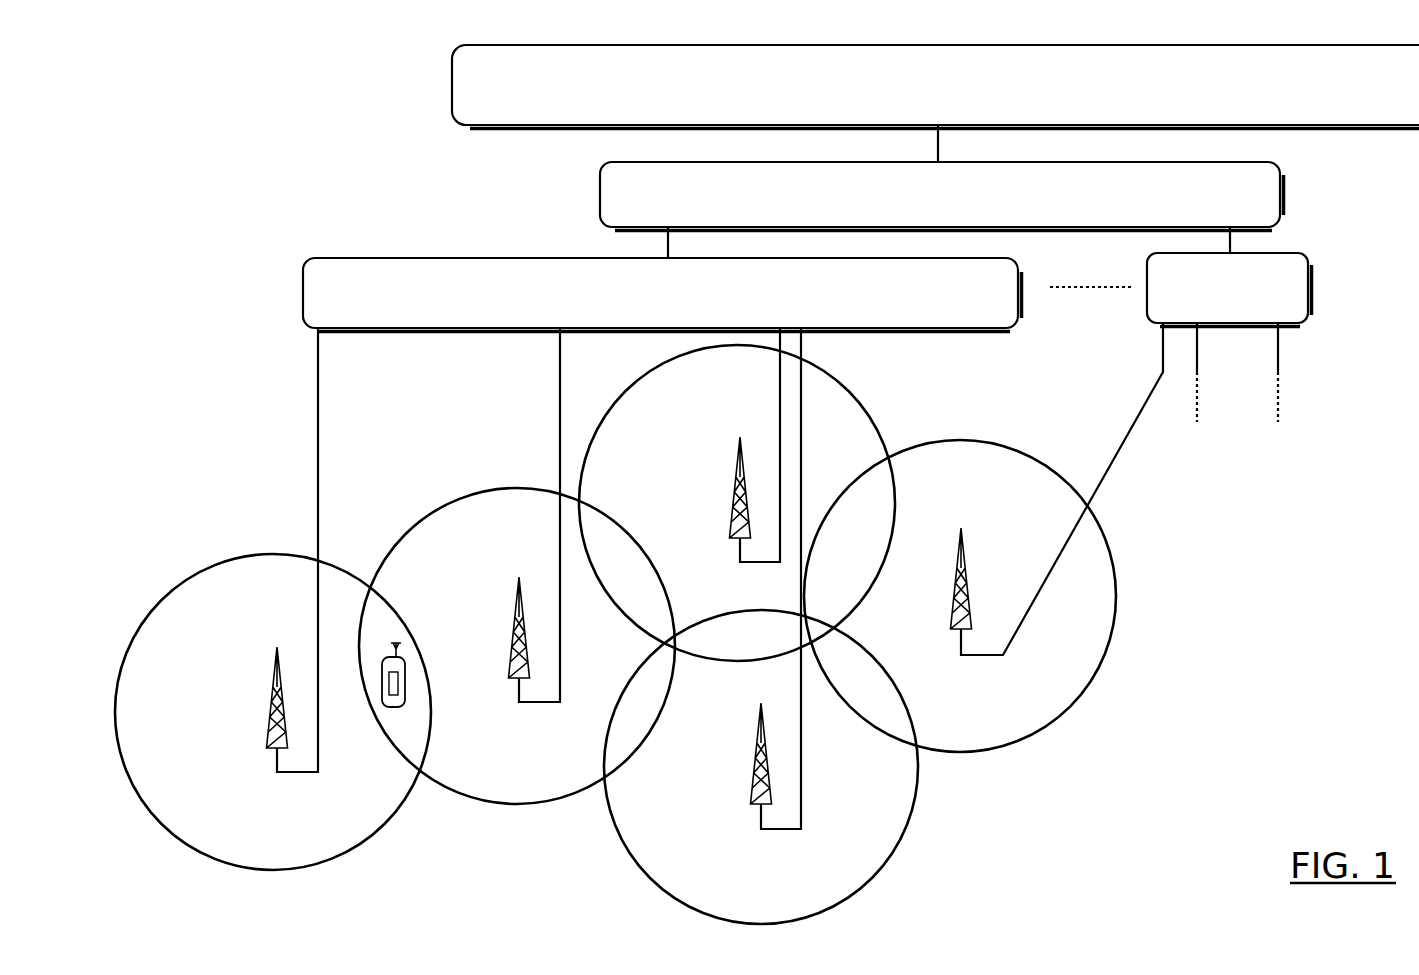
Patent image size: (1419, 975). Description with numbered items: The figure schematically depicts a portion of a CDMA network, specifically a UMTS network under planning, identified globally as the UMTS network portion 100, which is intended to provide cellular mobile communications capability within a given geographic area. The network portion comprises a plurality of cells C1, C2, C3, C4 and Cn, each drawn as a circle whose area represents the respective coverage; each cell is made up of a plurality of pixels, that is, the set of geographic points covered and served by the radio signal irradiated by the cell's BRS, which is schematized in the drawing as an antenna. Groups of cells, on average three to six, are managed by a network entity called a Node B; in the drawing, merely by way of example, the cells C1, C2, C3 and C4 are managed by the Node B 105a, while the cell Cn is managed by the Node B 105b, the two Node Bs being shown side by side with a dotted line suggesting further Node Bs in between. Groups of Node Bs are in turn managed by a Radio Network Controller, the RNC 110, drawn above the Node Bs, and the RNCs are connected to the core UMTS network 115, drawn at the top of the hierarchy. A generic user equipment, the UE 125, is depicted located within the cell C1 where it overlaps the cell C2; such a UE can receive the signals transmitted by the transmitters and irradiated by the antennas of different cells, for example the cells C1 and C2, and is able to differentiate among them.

The UMTS network portion 100 is at (230, 106).
The core UMTS network 115 is at (851, 118).
The Radio Network Controller 110 is at (1135, 204).
The Node B 105a is at (838, 306).
The Node B 105b is at (1313, 322).
The UE 125 is at (388, 655).
The cell C1 is at (385, 815).
The cell C2 is at (467, 495).
The cell C3 is at (902, 805).
The cell C4 is at (873, 417).
The cell Cn is at (1103, 668).